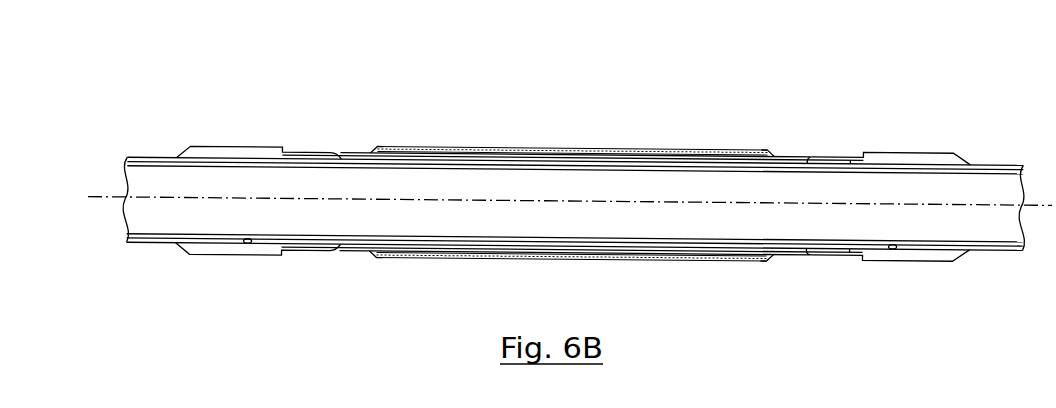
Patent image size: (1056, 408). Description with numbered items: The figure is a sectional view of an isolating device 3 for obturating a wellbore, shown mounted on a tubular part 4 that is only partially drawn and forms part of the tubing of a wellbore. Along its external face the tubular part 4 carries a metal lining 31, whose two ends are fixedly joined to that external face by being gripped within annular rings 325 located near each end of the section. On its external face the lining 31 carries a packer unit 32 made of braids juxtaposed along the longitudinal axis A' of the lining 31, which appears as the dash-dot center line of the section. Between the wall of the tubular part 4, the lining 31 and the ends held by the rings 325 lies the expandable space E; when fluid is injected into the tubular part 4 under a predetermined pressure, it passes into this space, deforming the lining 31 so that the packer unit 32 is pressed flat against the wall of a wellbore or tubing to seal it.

The isolating device 3 is at (930, 105).
The tubular part 4 is at (1004, 250).
The metal lining 31 is at (346, 153).
The packer unit 32 is at (626, 122).
The annular rings 325 is at (229, 147).
The expandable space E is at (411, 150).
The longitudinal axis A' is at (570, 144).